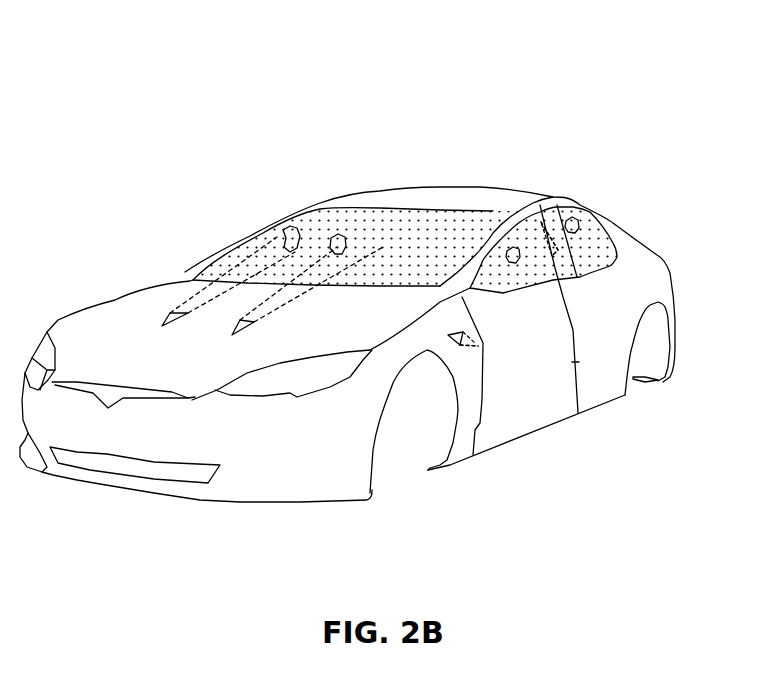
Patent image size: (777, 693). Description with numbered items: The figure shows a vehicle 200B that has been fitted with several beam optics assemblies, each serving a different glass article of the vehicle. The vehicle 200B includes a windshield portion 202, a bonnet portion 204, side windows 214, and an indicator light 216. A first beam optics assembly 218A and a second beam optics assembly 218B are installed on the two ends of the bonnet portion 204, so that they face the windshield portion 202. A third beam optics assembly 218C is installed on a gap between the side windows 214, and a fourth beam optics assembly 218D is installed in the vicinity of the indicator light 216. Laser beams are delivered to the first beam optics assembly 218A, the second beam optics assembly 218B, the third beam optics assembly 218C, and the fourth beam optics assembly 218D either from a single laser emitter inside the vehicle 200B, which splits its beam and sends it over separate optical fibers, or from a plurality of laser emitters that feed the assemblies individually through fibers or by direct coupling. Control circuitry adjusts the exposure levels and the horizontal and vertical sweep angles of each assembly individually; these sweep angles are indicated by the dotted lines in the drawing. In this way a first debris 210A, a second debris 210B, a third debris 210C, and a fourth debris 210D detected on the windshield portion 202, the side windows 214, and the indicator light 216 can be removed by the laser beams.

The vehicle 200B is at (627, 88).
The windshield portion 202 is at (413, 223).
The bonnet portion 204 is at (143, 353).
The first debris 210A is at (287, 240).
The second debris 210B is at (337, 242).
The third debris 210C is at (510, 252).
The fourth debris 210D is at (575, 219).
The side windows 214 is at (573, 270).
The indicator light 216 is at (450, 335).
The first beam optics assembly 218A is at (162, 326).
The second beam optics assembly 218B is at (233, 333).
The third beam optics assembly 218C is at (547, 240).
The fourth beam optics assembly 218D is at (470, 345).